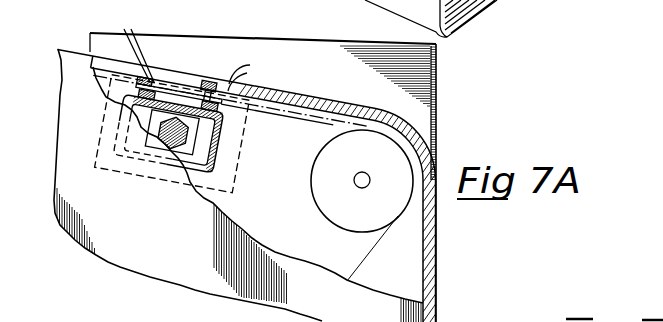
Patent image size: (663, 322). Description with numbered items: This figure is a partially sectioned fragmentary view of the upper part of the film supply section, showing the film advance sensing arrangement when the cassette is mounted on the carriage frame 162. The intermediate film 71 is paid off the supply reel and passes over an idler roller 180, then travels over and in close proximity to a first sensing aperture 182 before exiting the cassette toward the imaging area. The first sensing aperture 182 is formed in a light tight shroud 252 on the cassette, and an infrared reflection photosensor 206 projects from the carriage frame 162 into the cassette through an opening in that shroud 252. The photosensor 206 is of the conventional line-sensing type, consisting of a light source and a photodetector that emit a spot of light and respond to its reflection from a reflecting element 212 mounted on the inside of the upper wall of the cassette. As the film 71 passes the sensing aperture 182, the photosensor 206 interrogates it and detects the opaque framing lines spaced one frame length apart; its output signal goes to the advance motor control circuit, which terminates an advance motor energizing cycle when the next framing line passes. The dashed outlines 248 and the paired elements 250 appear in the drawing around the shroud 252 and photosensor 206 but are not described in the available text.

The intermediate film 71 is at (336, 122).
The carriage frame 162 is at (437, 97).
The idler roller 180 is at (331, 221).
The first sensing aperture 182 is at (199, 90).
The infrared reflection photosensor 206 is at (184, 156).
The reflecting element 212 is at (177, 72).
The mounting plate 248 is at (241, 173).
The clip 250 is at (194, 60).
The light tight shroud 252 is at (237, 128).